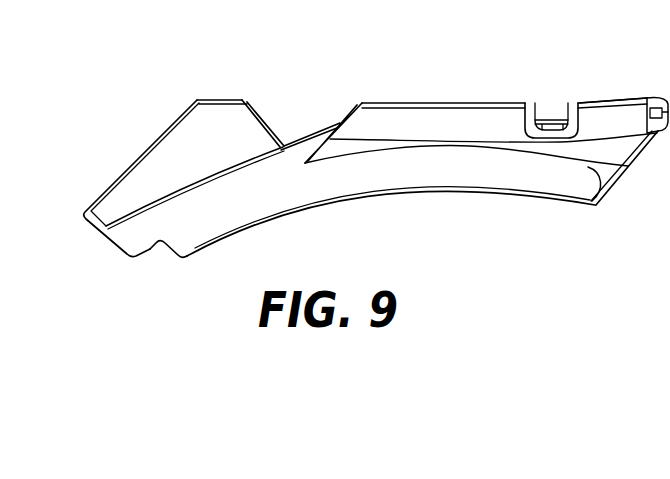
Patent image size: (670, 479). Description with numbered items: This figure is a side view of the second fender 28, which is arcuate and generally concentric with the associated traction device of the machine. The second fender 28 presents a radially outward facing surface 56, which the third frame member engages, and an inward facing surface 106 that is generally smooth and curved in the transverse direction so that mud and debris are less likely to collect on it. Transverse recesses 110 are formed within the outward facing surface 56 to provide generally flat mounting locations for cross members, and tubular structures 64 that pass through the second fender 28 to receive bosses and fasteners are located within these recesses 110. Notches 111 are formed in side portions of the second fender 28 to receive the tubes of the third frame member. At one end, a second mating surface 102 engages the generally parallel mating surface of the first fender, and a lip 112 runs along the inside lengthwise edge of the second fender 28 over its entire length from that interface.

The second fender 28 is at (221, 75).
The notches 111 is at (341, 117).
The lip 112 is at (198, 238).
The transverse recesses 110 is at (552, 121).
The radially outward facing surface 56 is at (611, 101).
The tubular structures 64 is at (546, 131).
The second mating surface 102 is at (631, 167).
The inward facing surface 106 is at (589, 206).